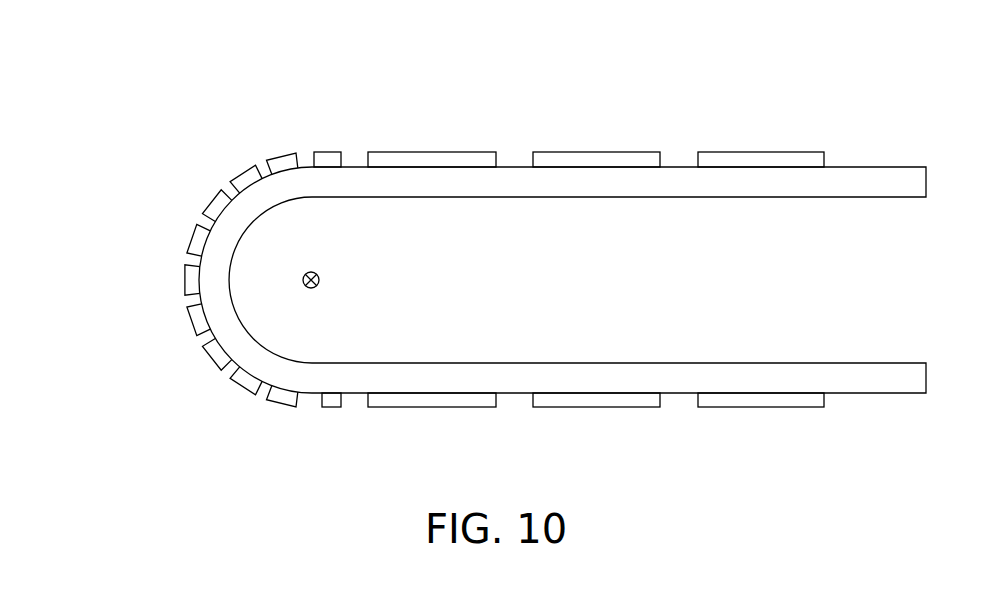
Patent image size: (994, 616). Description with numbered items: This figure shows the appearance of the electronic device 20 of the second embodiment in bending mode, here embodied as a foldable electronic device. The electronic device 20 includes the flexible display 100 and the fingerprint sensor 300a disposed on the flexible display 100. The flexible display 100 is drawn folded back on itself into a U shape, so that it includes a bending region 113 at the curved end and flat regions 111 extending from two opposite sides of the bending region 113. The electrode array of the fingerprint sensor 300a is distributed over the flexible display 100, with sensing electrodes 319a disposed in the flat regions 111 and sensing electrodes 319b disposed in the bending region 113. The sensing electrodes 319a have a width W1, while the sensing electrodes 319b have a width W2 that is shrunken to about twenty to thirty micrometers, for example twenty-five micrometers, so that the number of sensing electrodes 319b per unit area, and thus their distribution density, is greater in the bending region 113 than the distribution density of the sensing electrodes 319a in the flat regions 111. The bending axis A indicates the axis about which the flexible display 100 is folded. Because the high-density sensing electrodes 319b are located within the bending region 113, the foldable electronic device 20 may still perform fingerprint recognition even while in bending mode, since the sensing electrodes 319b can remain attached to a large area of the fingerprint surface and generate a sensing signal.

The electronic device 20 is at (183, 120).
The flexible display 100 is at (760, 185).
The flat region 111 is at (926, 487).
The bending region 113 is at (340, 95).
The fingerprint sensor 300a is at (613, 142).
The sensing electrodes 319a is at (808, 160).
The sensing electrodes 319b is at (332, 158).
The width of the sensing electrodes in the flat region W1 is at (496, 148).
The width of the sensing electrodes in the bending region W2 is at (255, 163).
The bending axis A is at (320, 281).